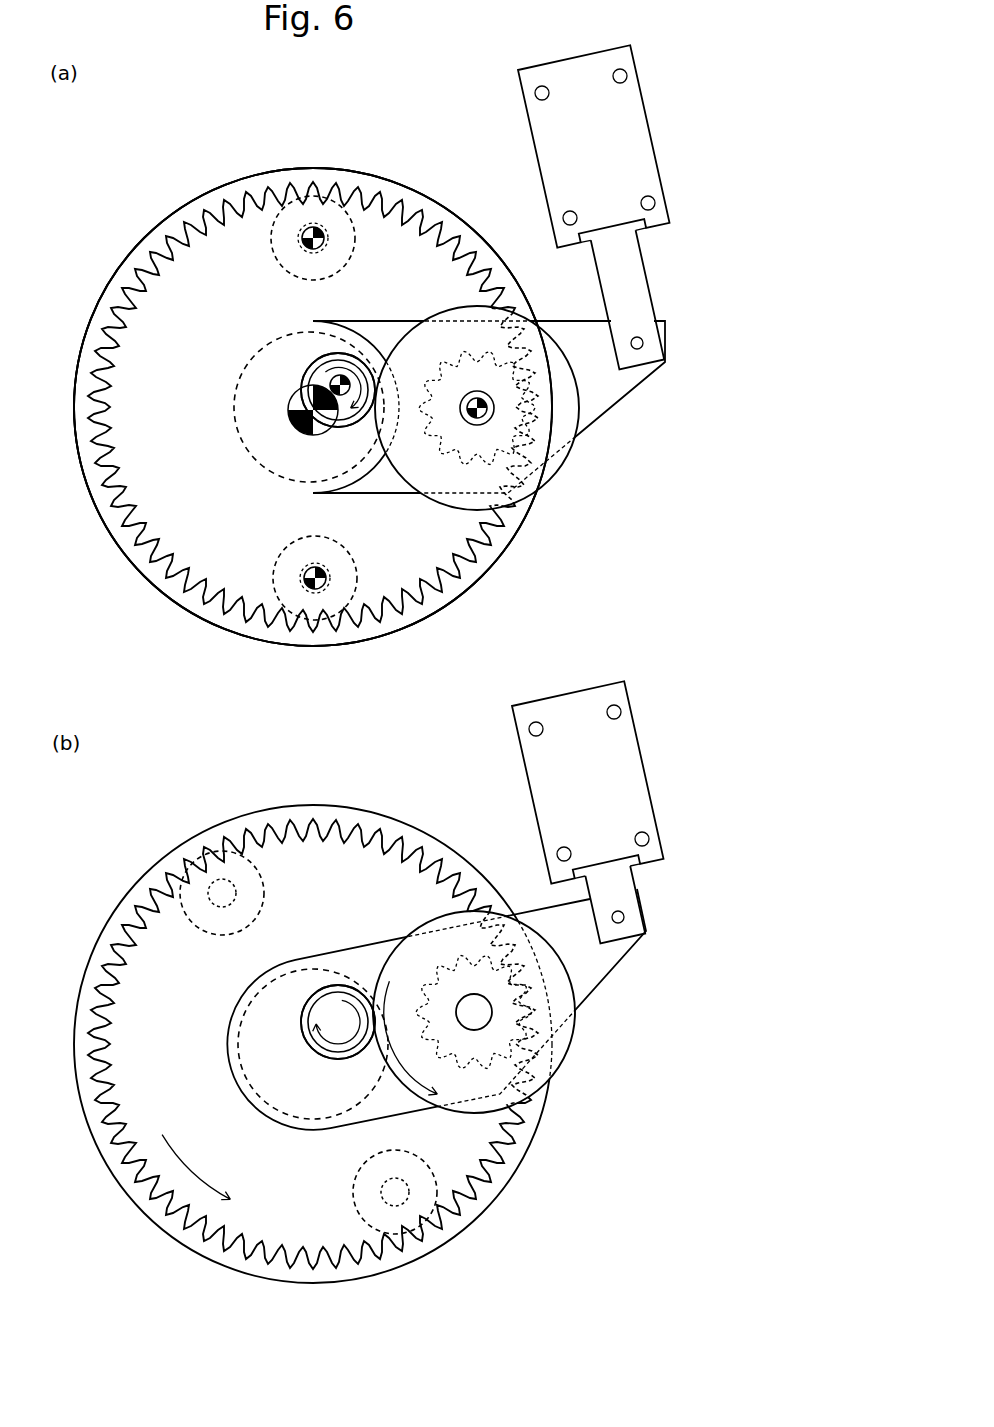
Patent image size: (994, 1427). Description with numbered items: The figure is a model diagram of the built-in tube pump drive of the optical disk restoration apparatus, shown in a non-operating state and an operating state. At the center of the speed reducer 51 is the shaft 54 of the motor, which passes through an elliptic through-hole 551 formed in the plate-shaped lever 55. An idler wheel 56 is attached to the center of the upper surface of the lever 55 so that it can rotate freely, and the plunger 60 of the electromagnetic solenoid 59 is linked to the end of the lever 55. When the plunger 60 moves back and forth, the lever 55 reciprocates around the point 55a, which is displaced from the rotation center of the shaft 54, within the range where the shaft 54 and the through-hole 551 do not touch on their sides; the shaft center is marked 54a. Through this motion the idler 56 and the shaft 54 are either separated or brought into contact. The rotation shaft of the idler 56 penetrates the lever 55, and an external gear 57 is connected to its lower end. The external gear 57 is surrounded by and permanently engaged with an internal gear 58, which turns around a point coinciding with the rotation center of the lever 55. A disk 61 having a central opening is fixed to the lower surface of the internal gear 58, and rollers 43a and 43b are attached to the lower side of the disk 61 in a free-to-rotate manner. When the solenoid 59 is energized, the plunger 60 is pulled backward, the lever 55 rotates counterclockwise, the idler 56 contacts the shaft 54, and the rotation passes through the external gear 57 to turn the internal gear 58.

The speed reducer 51 is at (244, 131).
The roller 43a is at (270, 237).
The roller 43b is at (283, 600).
The shaft 54 is at (338, 353).
The shaft center 54a is at (350, 374).
The lever 55 is at (617, 402).
The point 55a is at (293, 396).
The through-hole 551 is at (308, 363).
The idler wheel 56 is at (569, 460).
The external gear 57 is at (495, 462).
The internal gear 58 is at (462, 603).
The electromagnetic solenoid 59 is at (655, 128).
The plunger 60 is at (655, 290).
The disk 61 is at (394, 575).